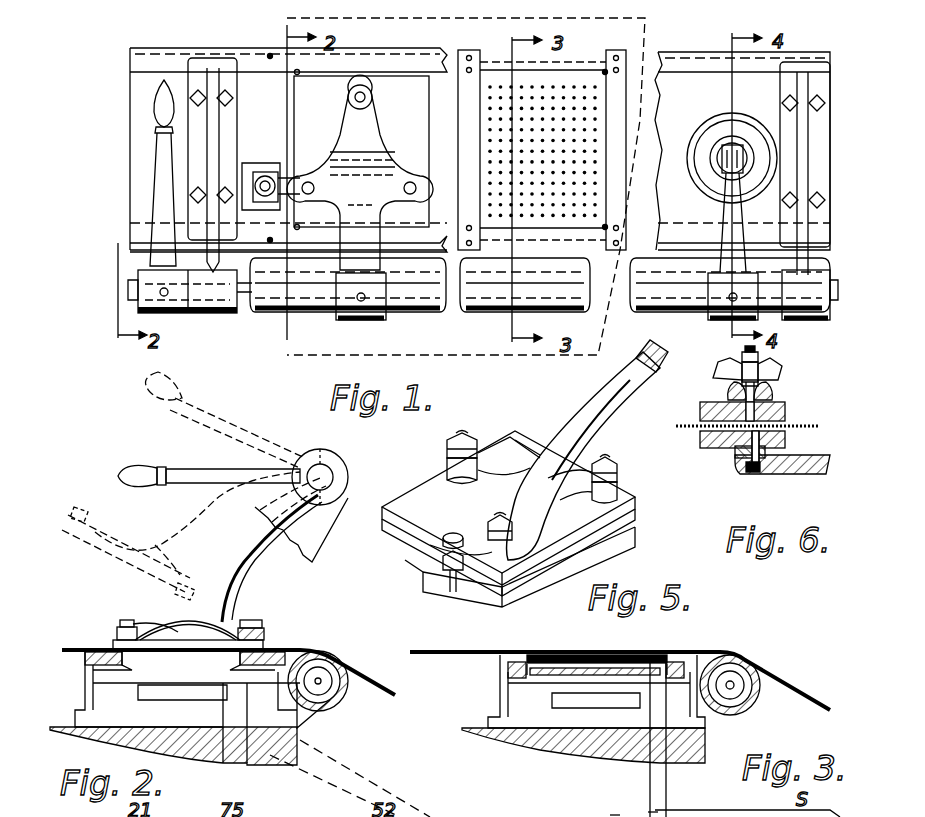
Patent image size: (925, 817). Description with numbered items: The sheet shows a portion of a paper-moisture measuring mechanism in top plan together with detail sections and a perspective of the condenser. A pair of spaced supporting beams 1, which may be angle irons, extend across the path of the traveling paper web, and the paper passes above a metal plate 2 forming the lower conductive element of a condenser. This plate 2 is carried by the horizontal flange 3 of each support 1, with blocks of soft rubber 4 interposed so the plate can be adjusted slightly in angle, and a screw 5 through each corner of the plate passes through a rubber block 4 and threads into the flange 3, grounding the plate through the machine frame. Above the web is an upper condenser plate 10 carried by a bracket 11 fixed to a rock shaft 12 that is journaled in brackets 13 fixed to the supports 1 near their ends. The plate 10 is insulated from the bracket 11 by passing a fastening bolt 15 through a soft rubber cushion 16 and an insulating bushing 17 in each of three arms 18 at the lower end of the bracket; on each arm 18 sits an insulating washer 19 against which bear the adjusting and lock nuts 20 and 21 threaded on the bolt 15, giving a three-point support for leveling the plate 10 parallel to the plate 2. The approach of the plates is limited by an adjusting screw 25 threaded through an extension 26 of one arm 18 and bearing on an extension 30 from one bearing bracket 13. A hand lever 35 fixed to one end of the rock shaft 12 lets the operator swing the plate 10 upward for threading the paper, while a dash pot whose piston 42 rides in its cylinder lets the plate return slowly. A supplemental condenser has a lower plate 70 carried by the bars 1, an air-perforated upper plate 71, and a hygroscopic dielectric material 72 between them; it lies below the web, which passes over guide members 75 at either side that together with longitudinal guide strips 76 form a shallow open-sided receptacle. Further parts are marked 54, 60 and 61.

In FIG. 1, the supporting beams 1 is at (130, 62).
In FIG. 2, the supporting beams 1 is at (85, 688).
In FIG. 3, the supporting beams 1 is at (496, 697).
In FIG. 2, the metal plate 2 is at (125, 650).
In FIG. 5, the metal plate 2 is at (485, 595).
In FIG. 6, the horizontal flange 3 is at (800, 458).
In FIG. 6, the rubber blocks 4 is at (738, 452).
In FIG. 6, the screw 5 is at (746, 468).
In FIG. 1, the upper condenser plate 10 is at (420, 130).
In FIG. 2, the upper condenser plate 10 is at (72, 518).
In FIG. 5, the upper condenser plate 10 is at (636, 504).
In FIG. 6, the upper condenser plate 10 is at (786, 410).
In FIG. 1, the bracket 11 is at (380, 217).
In FIG. 2, the bracket 11 is at (207, 500).
In FIG. 5, the bracket 11 is at (578, 406).
In FIG. 1, the rock shaft 12 is at (285, 316).
In FIG. 2, the rock shaft 12 is at (340, 466).
In FIG. 5, the rock shaft 12 is at (508, 552).
In FIG. 6, the rock shaft 12 is at (700, 440).
In FIG. 1, the brackets 13 is at (243, 314).
In FIG. 2, the brackets 13 is at (316, 532).
In FIG. 6, the fastening bolt 15 is at (770, 390).
In FIG. 6, the cushion 16 is at (728, 394).
In FIG. 6, the insulating bushing 17 is at (718, 374).
In FIG. 1, the arms 18 is at (380, 107).
In FIG. 2, the arms 18 is at (141, 630).
In FIG. 5, the arms 18 is at (478, 445).
In FIG. 6, the washer 19 is at (775, 372).
In FIG. 5, the adjusting nut 20 is at (452, 462).
In FIG. 6, the adjusting nut 20 is at (758, 372).
In FIG. 1, the lock nut 21 is at (350, 95).
In FIG. 5, the lock nut 21 is at (460, 436).
In FIG. 6, the lock nut 21 is at (745, 356).
In FIG. 1, the adjusting screw 25 is at (278, 183).
In FIG. 2, the adjusting screw 25 is at (220, 468).
In FIG. 5, the adjusting screw 25 is at (440, 560).
In FIG. 2, the extension 26 is at (262, 630).
In FIG. 5, the extension 26 is at (478, 555).
In FIG. 1, the extension 30 is at (258, 165).
In FIG. 1, the hand lever 35 is at (145, 294).
In FIG. 2, the hand lever 35 is at (226, 402).
In FIG. 1, the piston 42 is at (768, 120).
In FIG. 3, the post 54 is at (680, 812).
In FIG. 3, the standard 60 is at (643, 805).
In FIG. 3, the standard 61 is at (605, 808).
In FIG. 3, the lower plate 70 is at (556, 680).
In FIG. 3, the upper plate 71 is at (672, 660).
In FIG. 3, the dielectric material 72 is at (676, 665).
In FIG. 1, the guide members 75 is at (475, 130).
In FIG. 3, the guide members 75 is at (494, 640).
In FIG. 1, the guide strips 76 is at (440, 340).
In FIG. 2, the guide strips 76 is at (90, 650).